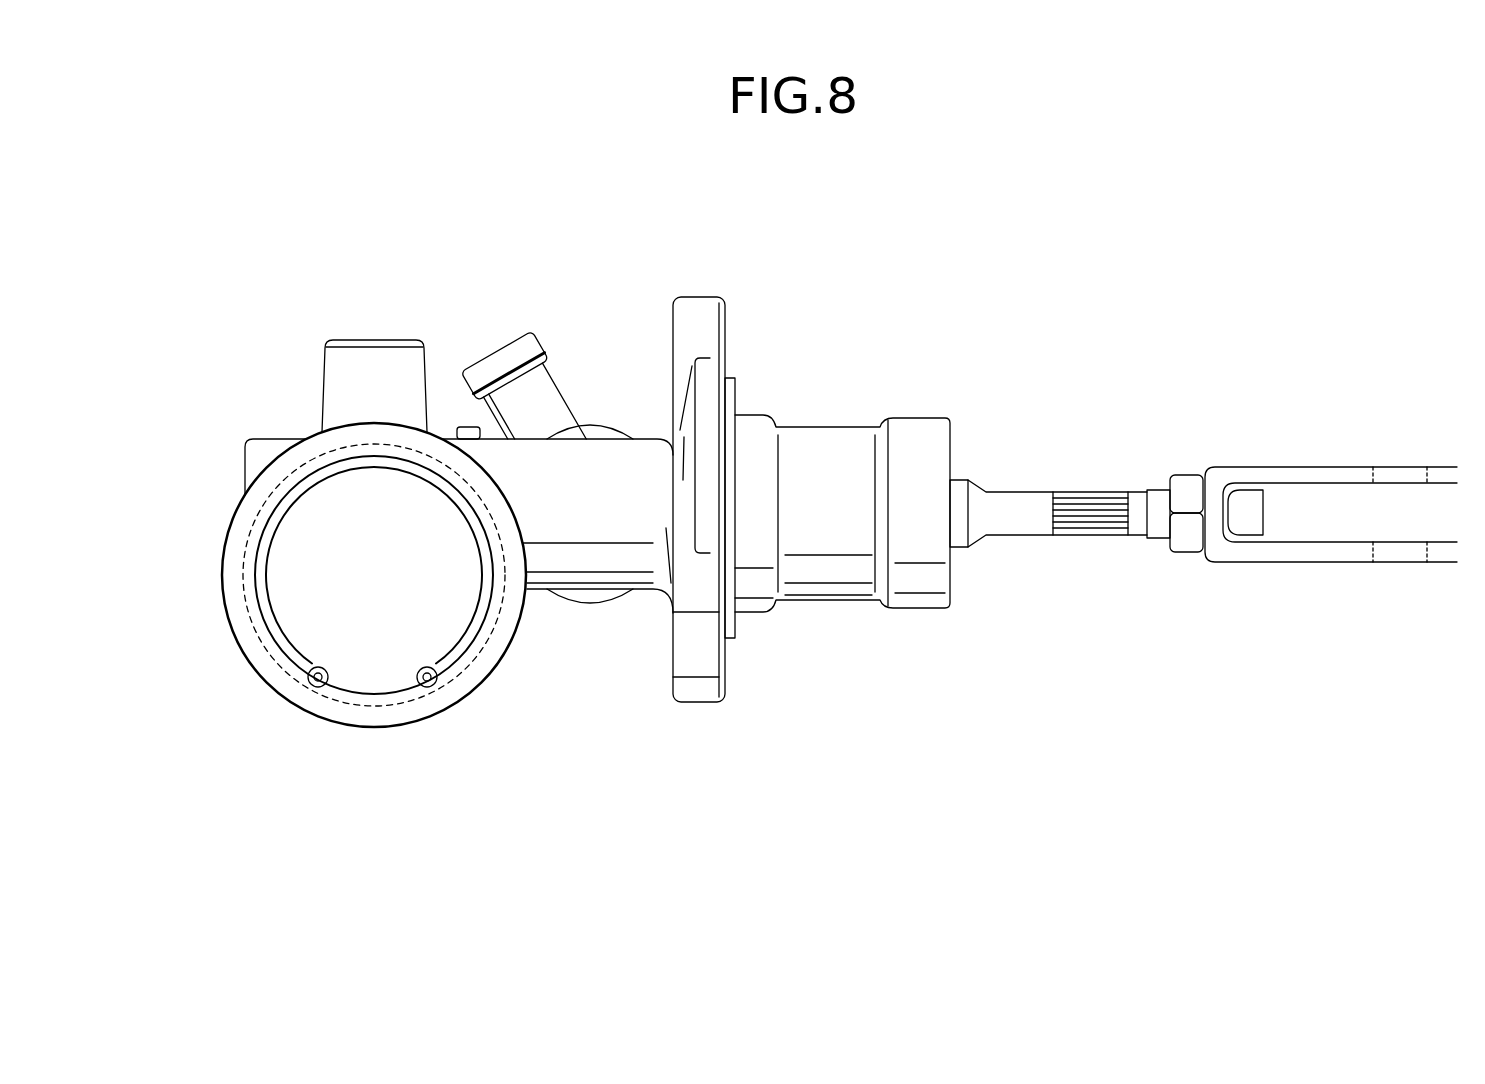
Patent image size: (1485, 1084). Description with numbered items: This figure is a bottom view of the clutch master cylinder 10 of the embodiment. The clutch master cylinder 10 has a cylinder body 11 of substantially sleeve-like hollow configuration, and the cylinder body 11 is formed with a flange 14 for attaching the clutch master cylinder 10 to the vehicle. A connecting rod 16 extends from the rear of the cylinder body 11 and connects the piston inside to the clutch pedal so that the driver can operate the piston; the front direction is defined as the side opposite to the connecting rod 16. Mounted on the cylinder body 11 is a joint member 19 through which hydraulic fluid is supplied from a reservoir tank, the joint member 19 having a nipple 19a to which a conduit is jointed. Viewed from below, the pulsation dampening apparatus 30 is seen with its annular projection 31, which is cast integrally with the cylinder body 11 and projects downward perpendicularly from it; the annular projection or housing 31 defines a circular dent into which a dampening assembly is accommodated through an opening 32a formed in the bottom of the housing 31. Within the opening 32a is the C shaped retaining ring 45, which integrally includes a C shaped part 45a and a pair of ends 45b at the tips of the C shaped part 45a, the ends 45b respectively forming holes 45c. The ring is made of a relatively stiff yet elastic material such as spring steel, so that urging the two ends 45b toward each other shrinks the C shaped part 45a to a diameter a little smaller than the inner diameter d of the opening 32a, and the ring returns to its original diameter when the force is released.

The clutch master cylinder 10 is at (846, 320).
The cylinder body 11 is at (842, 573).
The flange 14 is at (713, 370).
The connecting rod 16 is at (1017, 492).
The nipple 19a is at (526, 353).
The joint member 19 is at (527, 383).
The pulsation dampening apparatus 30 is at (228, 647).
The annular projection 31 is at (490, 662).
The opening 32a is at (275, 540).
The C shaped part 45a is at (374, 575).
The C shaped retaining ring 45 is at (328, 470).
The ends 45b is at (418, 683).
The holes 45c is at (451, 657).
The inner diameter of the opening d is at (487, 548).